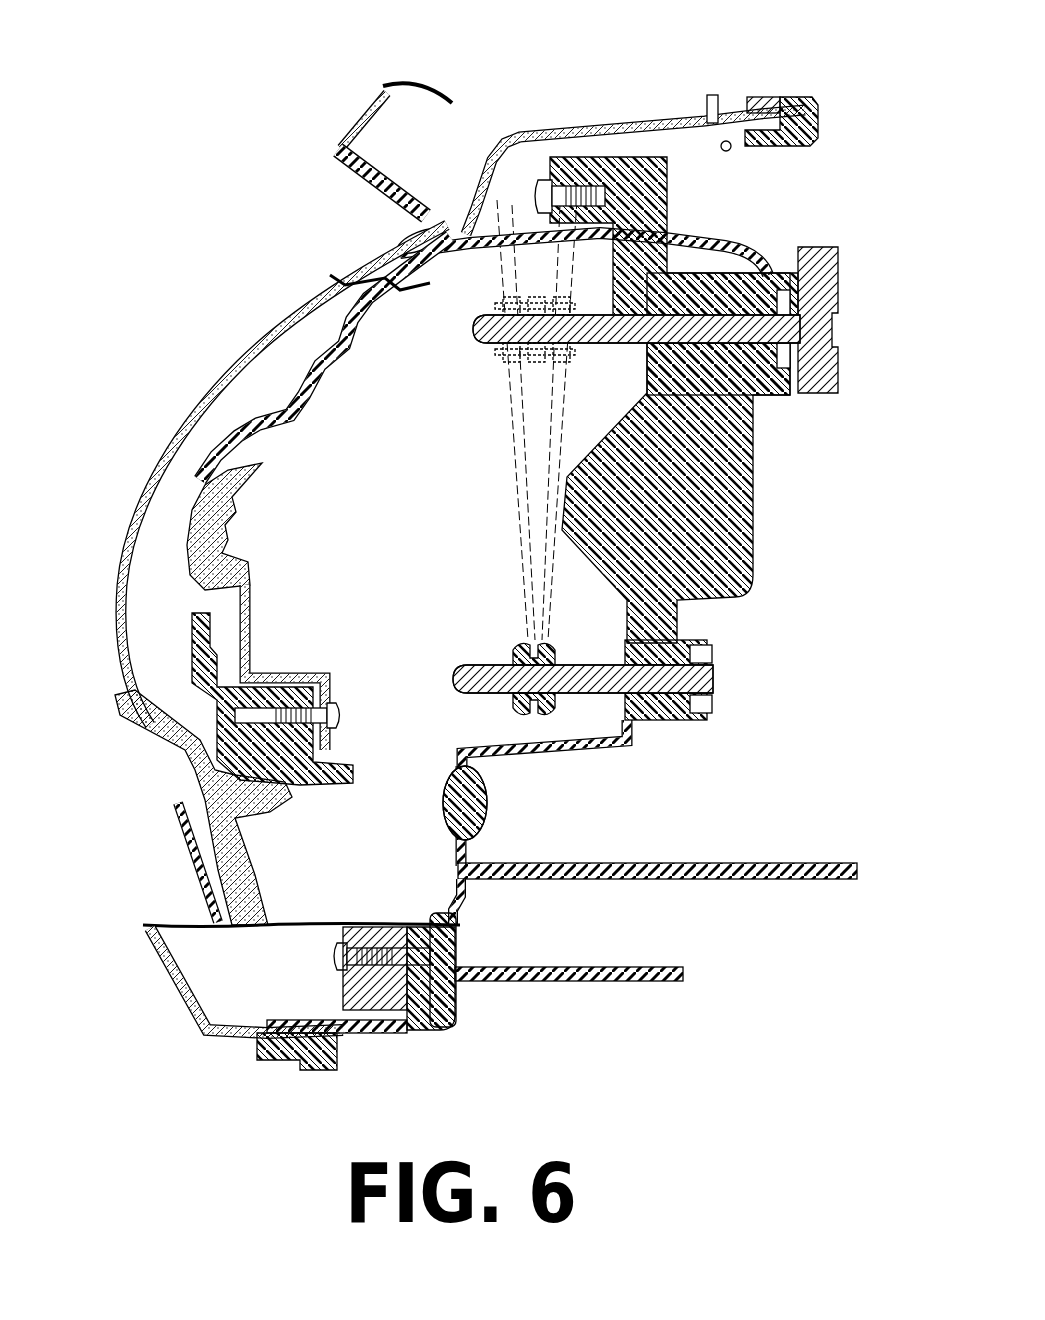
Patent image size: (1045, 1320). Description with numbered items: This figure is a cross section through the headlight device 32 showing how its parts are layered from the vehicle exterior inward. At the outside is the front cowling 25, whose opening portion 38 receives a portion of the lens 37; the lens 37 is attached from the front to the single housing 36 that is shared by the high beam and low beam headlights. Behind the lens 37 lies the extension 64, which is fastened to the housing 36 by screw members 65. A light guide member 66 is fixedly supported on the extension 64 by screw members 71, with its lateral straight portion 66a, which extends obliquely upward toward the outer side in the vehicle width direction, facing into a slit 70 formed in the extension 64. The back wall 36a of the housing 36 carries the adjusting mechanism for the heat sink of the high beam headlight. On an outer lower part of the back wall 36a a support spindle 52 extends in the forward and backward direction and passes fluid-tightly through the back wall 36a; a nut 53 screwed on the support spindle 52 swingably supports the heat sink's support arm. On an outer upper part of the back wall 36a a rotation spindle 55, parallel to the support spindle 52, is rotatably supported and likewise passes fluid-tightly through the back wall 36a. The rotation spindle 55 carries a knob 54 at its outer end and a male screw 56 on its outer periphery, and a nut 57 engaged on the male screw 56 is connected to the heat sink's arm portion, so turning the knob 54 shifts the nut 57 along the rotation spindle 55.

The front cowling 25 is at (355, 107).
The headlight device 32 is at (262, 326).
The housing 36 is at (435, 1030).
The back wall 36a is at (760, 527).
The lens 37 is at (185, 420).
The opening portion 38 is at (395, 240).
The support spindle 52 is at (492, 672).
The nut 53 is at (548, 715).
The knob 54 is at (820, 283).
The rotation spindle 55 is at (703, 333).
The male screw 56 is at (505, 350).
The nut 57 is at (523, 352).
The extension 64 is at (476, 217).
The screw member 65 is at (592, 183).
The light guide member 66 is at (250, 604).
The lateral straight portion 66a is at (225, 522).
The slit 70 is at (196, 490).
The screw member 71 is at (342, 716).